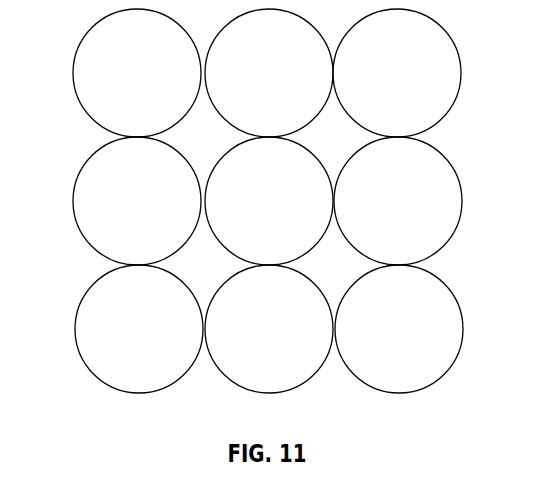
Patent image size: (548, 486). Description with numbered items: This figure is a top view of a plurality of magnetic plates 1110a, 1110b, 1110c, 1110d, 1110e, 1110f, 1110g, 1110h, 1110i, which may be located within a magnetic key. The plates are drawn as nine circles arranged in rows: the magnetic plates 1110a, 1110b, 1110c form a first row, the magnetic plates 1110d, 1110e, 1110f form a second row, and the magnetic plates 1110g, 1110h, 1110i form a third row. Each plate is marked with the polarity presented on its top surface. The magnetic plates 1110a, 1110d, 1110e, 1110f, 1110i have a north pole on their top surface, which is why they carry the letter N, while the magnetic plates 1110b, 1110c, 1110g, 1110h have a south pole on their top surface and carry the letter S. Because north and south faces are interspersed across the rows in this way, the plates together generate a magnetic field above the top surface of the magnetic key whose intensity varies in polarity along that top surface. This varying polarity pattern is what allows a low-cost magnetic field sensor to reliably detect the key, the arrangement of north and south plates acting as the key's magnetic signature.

The magnetic plate 1110a is at (101, 120).
The magnetic plate 1110b is at (112, 248).
The magnetic plate 1110c is at (112, 378).
The magnetic plate 1110d is at (242, 120).
The magnetic plate 1110e is at (245, 248).
The magnetic plate 1110f is at (247, 378).
The magnetic plate 1110g is at (371, 120).
The magnetic plate 1110h is at (372, 248).
The magnetic plate 1110i is at (376, 378).